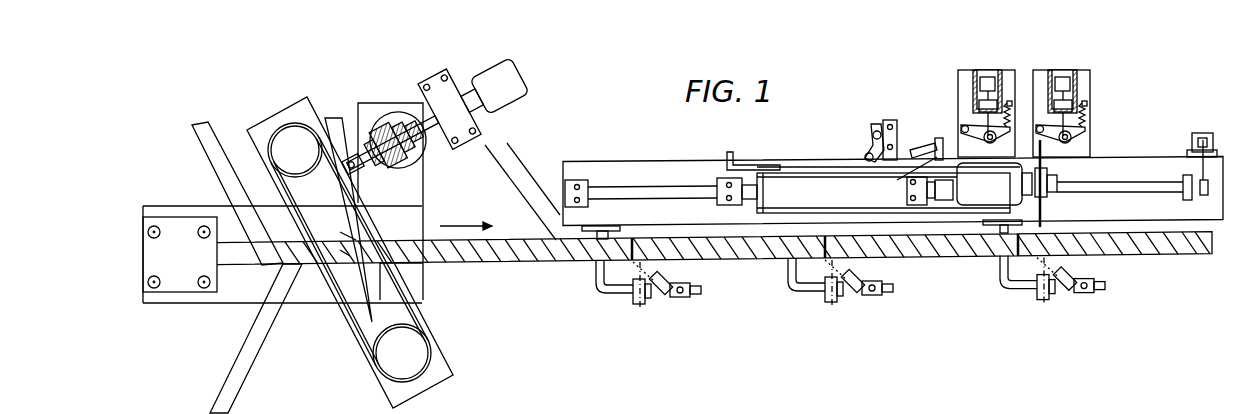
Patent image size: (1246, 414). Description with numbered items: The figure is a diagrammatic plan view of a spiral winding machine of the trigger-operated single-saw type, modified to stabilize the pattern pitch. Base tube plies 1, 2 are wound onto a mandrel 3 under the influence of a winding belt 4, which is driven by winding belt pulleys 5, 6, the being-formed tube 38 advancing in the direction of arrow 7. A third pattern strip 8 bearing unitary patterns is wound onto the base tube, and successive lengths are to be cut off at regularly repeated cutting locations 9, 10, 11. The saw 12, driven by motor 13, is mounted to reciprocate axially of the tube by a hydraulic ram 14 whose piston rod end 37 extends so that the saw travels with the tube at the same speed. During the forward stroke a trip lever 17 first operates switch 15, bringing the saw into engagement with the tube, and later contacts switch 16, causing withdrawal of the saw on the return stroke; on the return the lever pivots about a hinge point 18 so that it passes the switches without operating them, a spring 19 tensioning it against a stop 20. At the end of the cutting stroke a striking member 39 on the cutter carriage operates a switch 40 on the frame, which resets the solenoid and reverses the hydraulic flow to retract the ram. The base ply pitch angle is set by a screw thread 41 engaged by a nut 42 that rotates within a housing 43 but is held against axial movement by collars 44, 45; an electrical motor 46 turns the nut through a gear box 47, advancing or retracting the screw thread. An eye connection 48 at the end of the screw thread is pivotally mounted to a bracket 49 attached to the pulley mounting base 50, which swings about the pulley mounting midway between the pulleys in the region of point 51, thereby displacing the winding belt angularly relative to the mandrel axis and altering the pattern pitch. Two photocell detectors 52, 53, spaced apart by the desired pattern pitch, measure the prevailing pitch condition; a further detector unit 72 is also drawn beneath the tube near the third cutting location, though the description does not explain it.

The base tube ply 1 is at (199, 142).
The base tube ply 2 is at (246, 368).
The mandrel 3 is at (249, 258).
The winding belt 4 is at (348, 236).
The winding belt pulley 5 is at (288, 161).
The winding belt pulley 6 is at (395, 364).
The arrow 7 is at (466, 212).
The pattern strip 8 is at (507, 163).
The cutting location 9 is at (631, 262).
The cutting location 10 is at (823, 259).
The cutting location 11 is at (1019, 258).
The saw 12 is at (1042, 205).
The motor 13 is at (976, 195).
The hydraulic ram 14 is at (612, 183).
The switch 15 is at (959, 70).
The switch 16 is at (1034, 70).
The trip lever 17 is at (938, 138).
The hinge point 18 is at (914, 178).
The spring 19 is at (925, 145).
The stop 20 is at (906, 175).
The piston rod end 37 is at (758, 178).
The being-formed tube 38 is at (1195, 245).
The striking member 39 is at (733, 160).
The switch 40 is at (872, 142).
The screw thread 41 is at (356, 150).
The nut 42 is at (402, 112).
The housing 43 is at (385, 112).
The collar 44 is at (408, 112).
The collar 45 is at (371, 128).
The electrical motor 46 is at (507, 73).
The gear box 47 is at (448, 102).
The eye connection 48 is at (352, 148).
The bracket 49 is at (346, 165).
The pulley mounting base 50 is at (272, 116).
The point 51 is at (344, 254).
The photocell detector 52 is at (650, 307).
The photocell detector 53 is at (836, 305).
The third valve 72 is at (1050, 303).